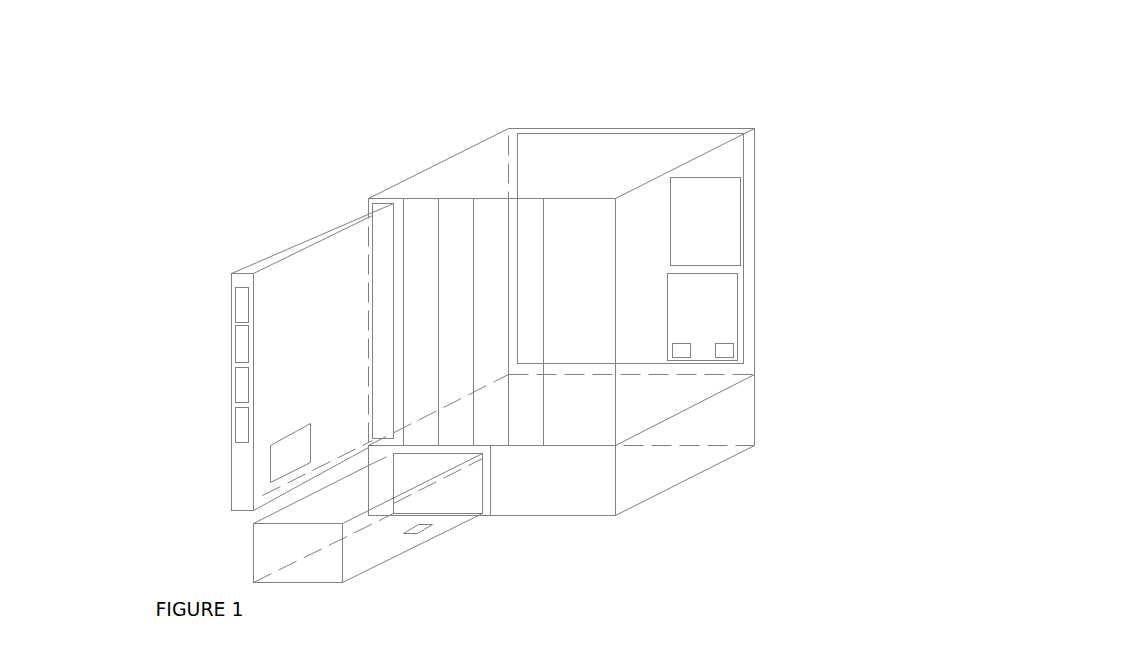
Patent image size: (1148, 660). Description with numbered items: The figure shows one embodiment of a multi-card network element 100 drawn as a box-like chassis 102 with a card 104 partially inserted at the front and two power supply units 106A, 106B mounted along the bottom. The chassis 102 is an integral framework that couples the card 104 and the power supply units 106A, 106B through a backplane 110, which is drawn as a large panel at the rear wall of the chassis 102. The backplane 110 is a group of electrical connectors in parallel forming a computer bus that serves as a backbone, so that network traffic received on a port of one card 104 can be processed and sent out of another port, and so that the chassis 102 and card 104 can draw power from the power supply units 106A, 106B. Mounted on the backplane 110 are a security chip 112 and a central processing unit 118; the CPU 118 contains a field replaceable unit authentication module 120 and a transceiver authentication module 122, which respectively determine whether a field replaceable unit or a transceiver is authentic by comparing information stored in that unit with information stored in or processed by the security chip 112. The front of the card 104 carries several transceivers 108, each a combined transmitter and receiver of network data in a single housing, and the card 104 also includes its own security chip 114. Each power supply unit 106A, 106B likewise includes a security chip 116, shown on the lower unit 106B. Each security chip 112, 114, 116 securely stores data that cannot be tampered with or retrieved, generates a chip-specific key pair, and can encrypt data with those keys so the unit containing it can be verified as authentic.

The multi-card network element 100 is at (341, 92).
The chassis 102 is at (757, 318).
The card 104 is at (269, 255).
The power supply unit 106A is at (562, 481).
The power supply unit 106B is at (318, 582).
The transceiver 108 is at (232, 305).
The backplane 110 is at (596, 151).
The security chip 112 is at (706, 222).
The security chip 114 is at (268, 472).
The security chip 116 is at (424, 532).
The central processing unit 118 is at (703, 317).
The field replaceable unit authentication module 120 is at (735, 350).
The transceiver authentication module 122 is at (692, 350).